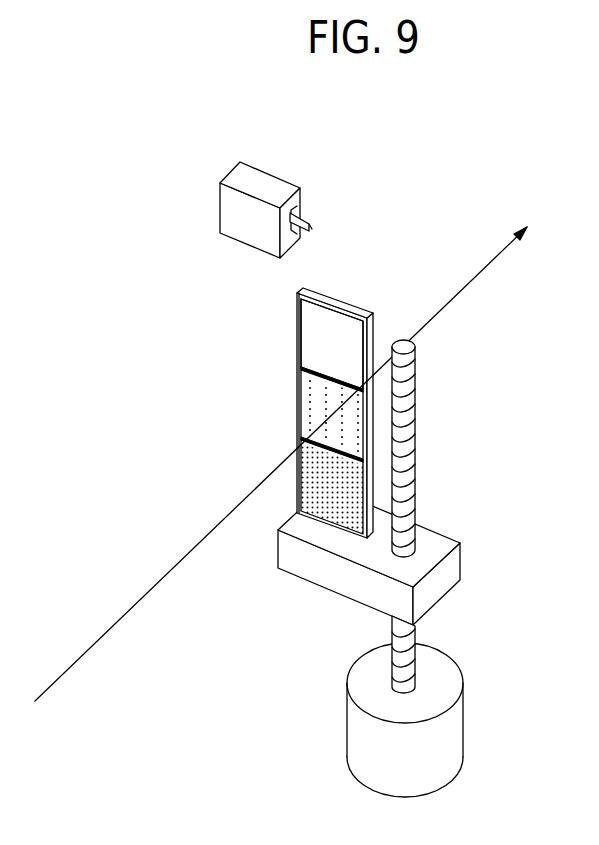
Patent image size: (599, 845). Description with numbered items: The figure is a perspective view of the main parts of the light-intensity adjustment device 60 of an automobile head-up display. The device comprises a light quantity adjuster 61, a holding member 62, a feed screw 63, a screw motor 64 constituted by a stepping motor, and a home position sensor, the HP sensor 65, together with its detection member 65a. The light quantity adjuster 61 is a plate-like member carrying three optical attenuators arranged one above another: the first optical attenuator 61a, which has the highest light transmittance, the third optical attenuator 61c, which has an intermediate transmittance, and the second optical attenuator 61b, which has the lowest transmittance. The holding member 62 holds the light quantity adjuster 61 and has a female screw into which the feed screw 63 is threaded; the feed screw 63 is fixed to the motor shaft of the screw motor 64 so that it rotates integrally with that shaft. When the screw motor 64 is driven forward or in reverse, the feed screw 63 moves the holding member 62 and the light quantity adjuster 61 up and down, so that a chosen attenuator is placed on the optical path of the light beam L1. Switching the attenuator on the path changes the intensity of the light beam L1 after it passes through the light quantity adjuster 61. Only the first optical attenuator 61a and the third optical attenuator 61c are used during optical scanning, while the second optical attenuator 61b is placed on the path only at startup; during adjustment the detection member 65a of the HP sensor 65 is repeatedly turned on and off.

The light-intensity adjustment device 60 is at (442, 155).
The light quantity adjuster 61 is at (368, 309).
The first optical attenuator 61a is at (313, 333).
The second optical attenuator 61b is at (296, 494).
The third optical attenuator 61c is at (305, 387).
The holding member 62 is at (430, 527).
The feed screw 63 is at (416, 432).
The screw motor 64 is at (350, 668).
The HP sensor 65 is at (231, 168).
The detection member 65a is at (308, 216).
The light beam L1 is at (133, 607).